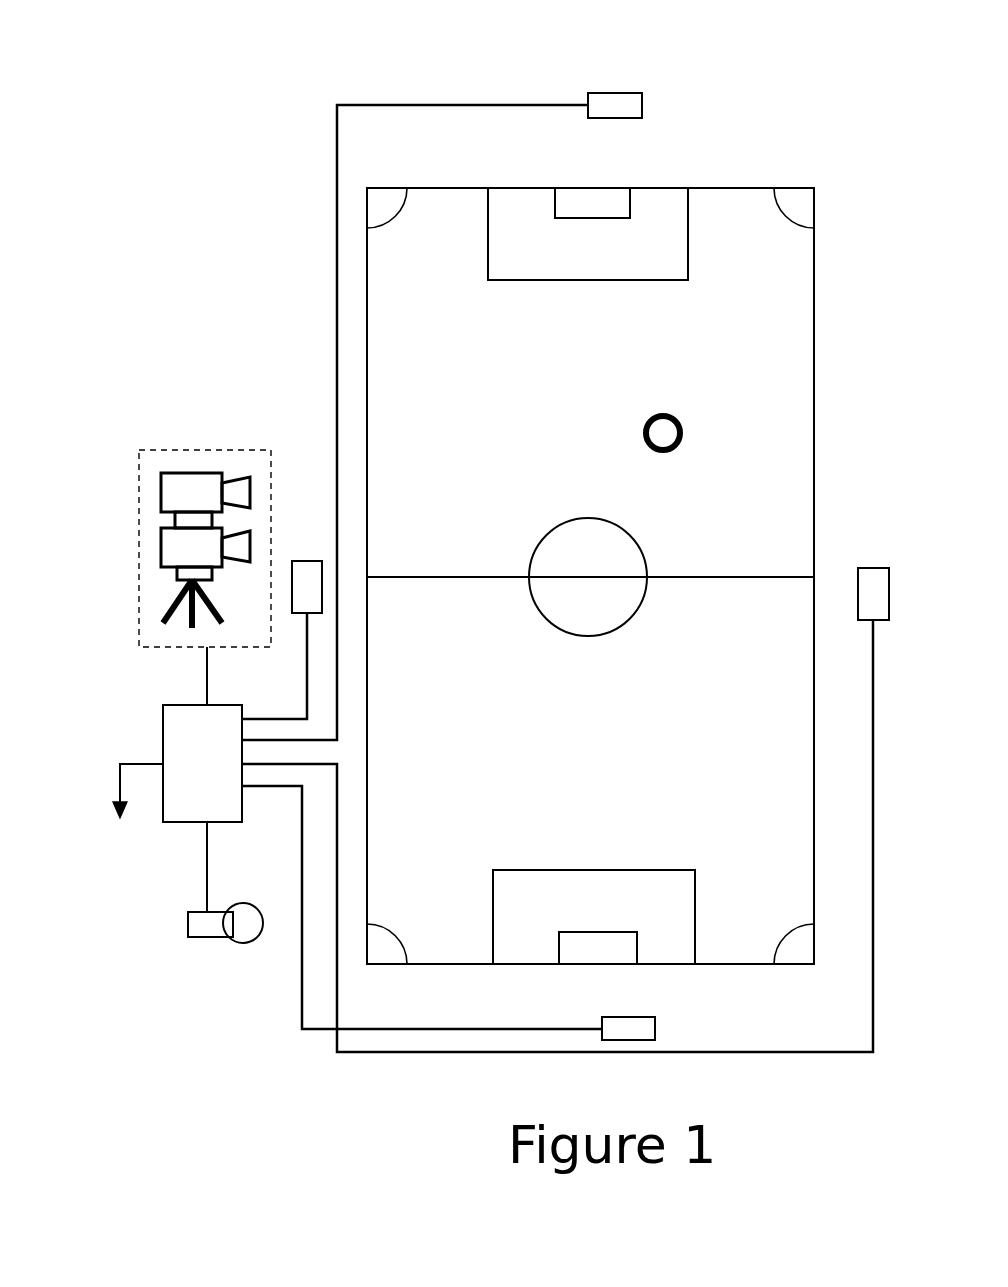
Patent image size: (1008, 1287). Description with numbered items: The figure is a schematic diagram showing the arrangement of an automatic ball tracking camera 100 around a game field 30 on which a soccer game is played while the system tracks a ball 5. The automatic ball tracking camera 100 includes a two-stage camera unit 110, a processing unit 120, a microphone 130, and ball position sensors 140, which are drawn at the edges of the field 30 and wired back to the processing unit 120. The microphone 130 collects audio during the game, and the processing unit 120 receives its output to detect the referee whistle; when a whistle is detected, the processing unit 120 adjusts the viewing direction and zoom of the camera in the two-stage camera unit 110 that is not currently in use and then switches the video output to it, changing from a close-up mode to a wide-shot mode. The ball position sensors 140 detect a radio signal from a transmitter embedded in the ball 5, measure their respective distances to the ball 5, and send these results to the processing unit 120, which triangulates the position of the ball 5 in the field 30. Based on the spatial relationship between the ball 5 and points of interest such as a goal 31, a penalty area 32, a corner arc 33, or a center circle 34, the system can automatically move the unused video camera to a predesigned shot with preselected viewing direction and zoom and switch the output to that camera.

The ball 5 is at (648, 418).
The game field 30 is at (738, 187).
The goal 31 is at (600, 188).
The penalty area 32 is at (658, 282).
The corner arc 33 is at (395, 216).
The center circle 34 is at (565, 520).
The automatic ball tracking camera 100 is at (184, 403).
The two-stage camera unit 110 is at (140, 545).
The processing unit 120 is at (163, 732).
The microphone 130 is at (210, 938).
The ball position sensors 140 is at (607, 93).